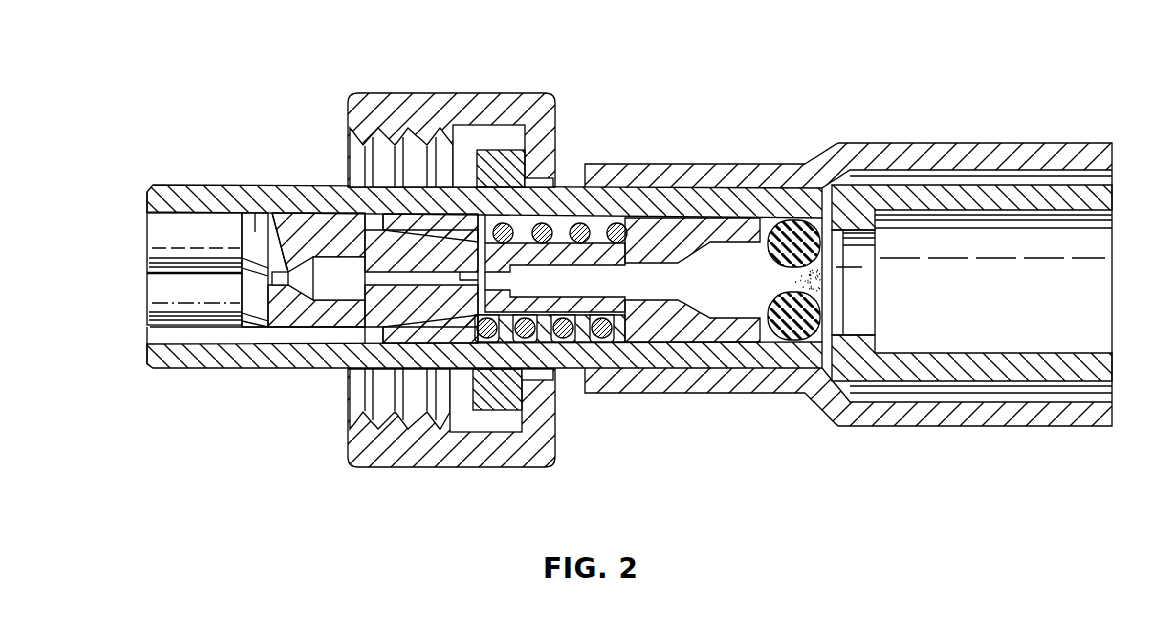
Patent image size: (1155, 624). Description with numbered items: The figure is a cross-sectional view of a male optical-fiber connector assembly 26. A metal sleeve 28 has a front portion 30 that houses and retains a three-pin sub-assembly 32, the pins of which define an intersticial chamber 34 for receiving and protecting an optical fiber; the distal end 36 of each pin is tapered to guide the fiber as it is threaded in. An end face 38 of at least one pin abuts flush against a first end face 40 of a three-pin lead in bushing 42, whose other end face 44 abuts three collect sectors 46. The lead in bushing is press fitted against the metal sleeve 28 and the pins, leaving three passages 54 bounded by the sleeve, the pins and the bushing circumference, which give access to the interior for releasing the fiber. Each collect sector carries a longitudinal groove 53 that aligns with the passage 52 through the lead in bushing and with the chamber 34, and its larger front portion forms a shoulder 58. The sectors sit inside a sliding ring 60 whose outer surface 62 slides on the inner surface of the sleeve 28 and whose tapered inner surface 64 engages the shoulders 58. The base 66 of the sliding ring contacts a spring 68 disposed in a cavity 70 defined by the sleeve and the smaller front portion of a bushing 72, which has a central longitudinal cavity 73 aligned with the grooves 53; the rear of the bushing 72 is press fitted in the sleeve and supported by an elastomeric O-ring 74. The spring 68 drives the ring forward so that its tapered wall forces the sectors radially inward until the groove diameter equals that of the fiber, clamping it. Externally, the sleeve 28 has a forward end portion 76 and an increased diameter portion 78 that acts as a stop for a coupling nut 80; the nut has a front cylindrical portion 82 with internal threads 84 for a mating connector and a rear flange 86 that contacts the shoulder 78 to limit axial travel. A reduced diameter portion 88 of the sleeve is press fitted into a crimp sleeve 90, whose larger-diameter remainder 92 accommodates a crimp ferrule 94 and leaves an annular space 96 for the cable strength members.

The connector assembly 26 is at (750, 80).
The metal sleeve 28 is at (327, 364).
The front portion 30 is at (193, 362).
The three-pin sub-assembly 32 is at (173, 292).
The intersticial chamber 34 is at (148, 280).
The distal end 36 is at (252, 210).
The end face 38 is at (273, 215).
The first end face 40 is at (302, 215).
The three-pin lead in bushing 42 is at (304, 250).
The other end face 44 is at (345, 225).
The collect sectors 46 is at (402, 261).
The passage 52 is at (281, 286).
The longitudinal groove 53 is at (362, 335).
The passages 54 is at (262, 327).
The shoulder 58 is at (372, 328).
The sliding ring 60 is at (400, 332).
The outer surface 62 is at (420, 326).
The inner surface 64 is at (445, 322).
The base 66 is at (490, 340).
The spring 68 is at (540, 318).
The cavity 70 is at (507, 279).
The bushing 72 is at (660, 328).
The central longitudinal cavity 73 is at (552, 332).
The O-ring 74 is at (800, 332).
The forward end portion 76 is at (405, 133).
The increased diameter portion 78 is at (503, 162).
The coupling nut 80 is at (547, 103).
The front cylindrical portion 82 is at (456, 108).
The internal threads 84 is at (429, 150).
The flange 86 is at (543, 138).
The reduced diameter portion 88 is at (560, 210).
The crimp sleeve 90 is at (662, 173).
The crimp sleeve remainder 92 is at (878, 152).
The crimp ferrule 94 is at (920, 192).
The annular space 96 is at (1030, 175).